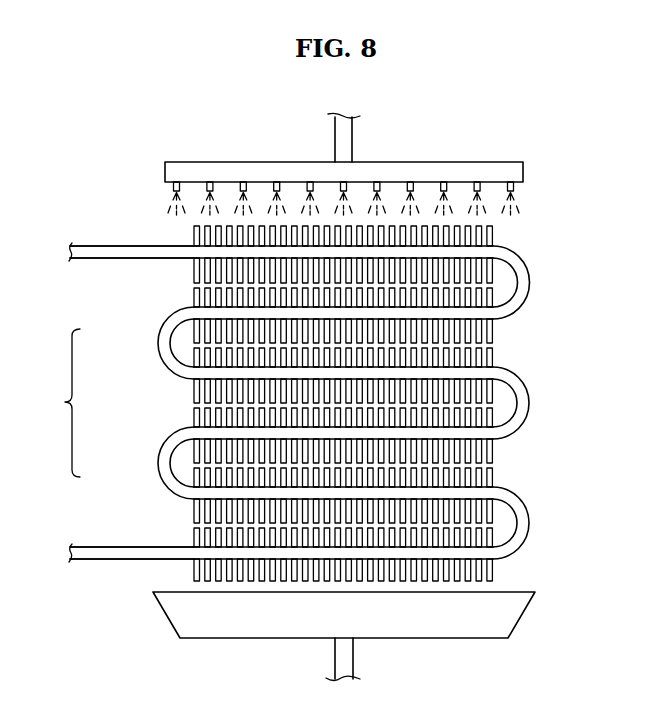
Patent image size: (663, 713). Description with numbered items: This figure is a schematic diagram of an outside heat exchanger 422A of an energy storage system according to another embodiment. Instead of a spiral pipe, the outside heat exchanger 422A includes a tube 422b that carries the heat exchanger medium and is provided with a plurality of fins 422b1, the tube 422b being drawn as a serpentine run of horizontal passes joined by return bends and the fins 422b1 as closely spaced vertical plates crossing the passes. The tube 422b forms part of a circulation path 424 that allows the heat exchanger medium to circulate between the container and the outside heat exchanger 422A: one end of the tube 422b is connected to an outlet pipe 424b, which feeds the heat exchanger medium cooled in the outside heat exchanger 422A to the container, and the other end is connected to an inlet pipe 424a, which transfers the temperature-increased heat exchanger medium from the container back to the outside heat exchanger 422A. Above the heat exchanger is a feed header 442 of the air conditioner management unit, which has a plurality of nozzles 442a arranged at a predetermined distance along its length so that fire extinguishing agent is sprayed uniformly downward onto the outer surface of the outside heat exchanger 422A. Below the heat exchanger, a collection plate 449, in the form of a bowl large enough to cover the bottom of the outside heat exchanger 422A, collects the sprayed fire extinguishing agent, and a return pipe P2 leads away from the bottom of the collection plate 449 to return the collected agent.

The feed header 442 is at (486, 152).
The nozzles 442a is at (516, 188).
The outside heat exchanger 422A is at (354, 403).
The tube 422b is at (528, 282).
The fins 422b1 is at (494, 358).
The circulation path 424 is at (111, 402).
The outlet pipe 424b is at (108, 259).
The inlet pipe 424a is at (108, 546).
The collection plate 449 is at (523, 611).
The return pipe P2 is at (354, 657).